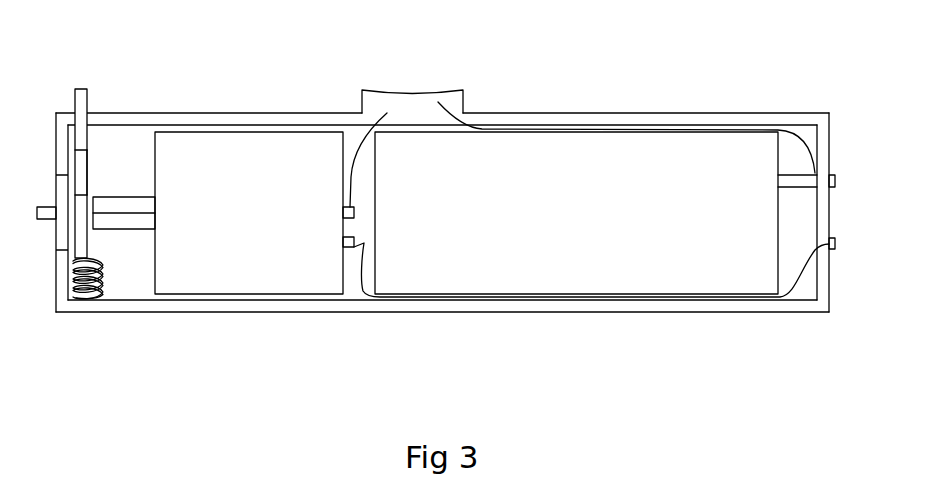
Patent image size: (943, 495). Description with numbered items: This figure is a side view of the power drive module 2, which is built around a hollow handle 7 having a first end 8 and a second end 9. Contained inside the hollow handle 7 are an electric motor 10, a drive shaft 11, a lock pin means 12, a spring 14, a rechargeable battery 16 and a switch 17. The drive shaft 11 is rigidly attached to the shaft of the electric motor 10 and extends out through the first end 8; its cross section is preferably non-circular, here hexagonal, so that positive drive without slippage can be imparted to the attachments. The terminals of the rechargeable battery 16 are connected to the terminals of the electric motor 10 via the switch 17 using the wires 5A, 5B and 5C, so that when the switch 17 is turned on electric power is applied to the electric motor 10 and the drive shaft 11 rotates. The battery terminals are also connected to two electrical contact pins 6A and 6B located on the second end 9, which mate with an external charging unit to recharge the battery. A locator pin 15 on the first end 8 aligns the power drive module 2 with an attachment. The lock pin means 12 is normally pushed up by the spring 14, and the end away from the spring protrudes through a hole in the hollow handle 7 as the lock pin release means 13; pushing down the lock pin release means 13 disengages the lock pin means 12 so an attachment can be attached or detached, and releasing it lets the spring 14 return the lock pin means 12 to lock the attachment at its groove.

The power drive module 2 is at (510, 92).
The wire 5A is at (362, 140).
The wire 5B is at (368, 296).
The wire 5C is at (813, 173).
The electrical contact pin 6A is at (834, 183).
The electrical contact pin 6B is at (833, 250).
The hollow handle 7 is at (597, 112).
The first end 8 is at (55, 138).
The second end 9 is at (830, 118).
The electric motor 10 is at (205, 294).
The drive shaft 11 is at (107, 197).
The lock pin means 12 is at (87, 167).
The lock pin release means 13 is at (83, 86).
The spring 14 is at (90, 288).
The locator pin 15 is at (45, 220).
The rechargeable battery 16 is at (507, 294).
The switch 17 is at (413, 92).